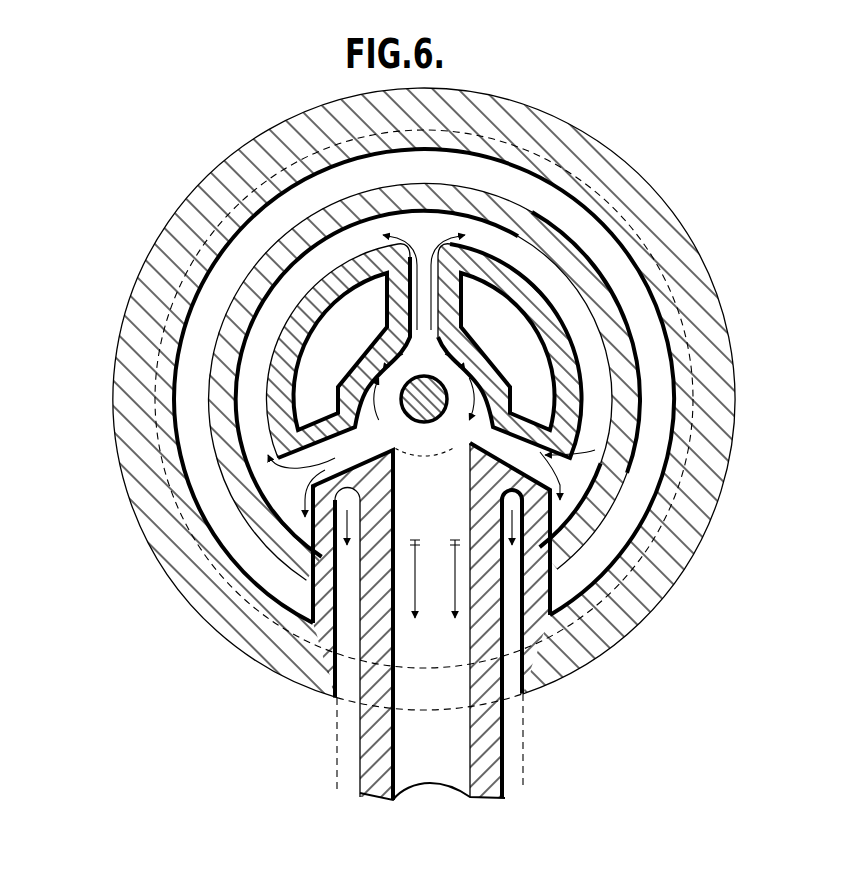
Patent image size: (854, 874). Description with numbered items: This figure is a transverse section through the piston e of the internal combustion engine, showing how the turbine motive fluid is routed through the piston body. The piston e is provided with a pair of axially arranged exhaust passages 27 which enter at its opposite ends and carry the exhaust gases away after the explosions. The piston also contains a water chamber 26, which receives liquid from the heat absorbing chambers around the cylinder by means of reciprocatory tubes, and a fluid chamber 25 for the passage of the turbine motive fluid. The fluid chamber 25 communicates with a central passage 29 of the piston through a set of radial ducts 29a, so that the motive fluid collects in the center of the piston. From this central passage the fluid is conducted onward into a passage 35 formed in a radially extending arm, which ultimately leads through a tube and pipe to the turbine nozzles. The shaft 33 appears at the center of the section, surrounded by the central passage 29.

The fluid chamber 25 is at (297, 283).
The water chamber 26 is at (527, 195).
The exhaust passages 27 is at (358, 317).
The central passage 29 is at (424, 345).
The radial ducts 29a is at (431, 478).
The shaft 33 is at (424, 414).
The passage 35 is at (445, 748).
The piston e is at (712, 314).